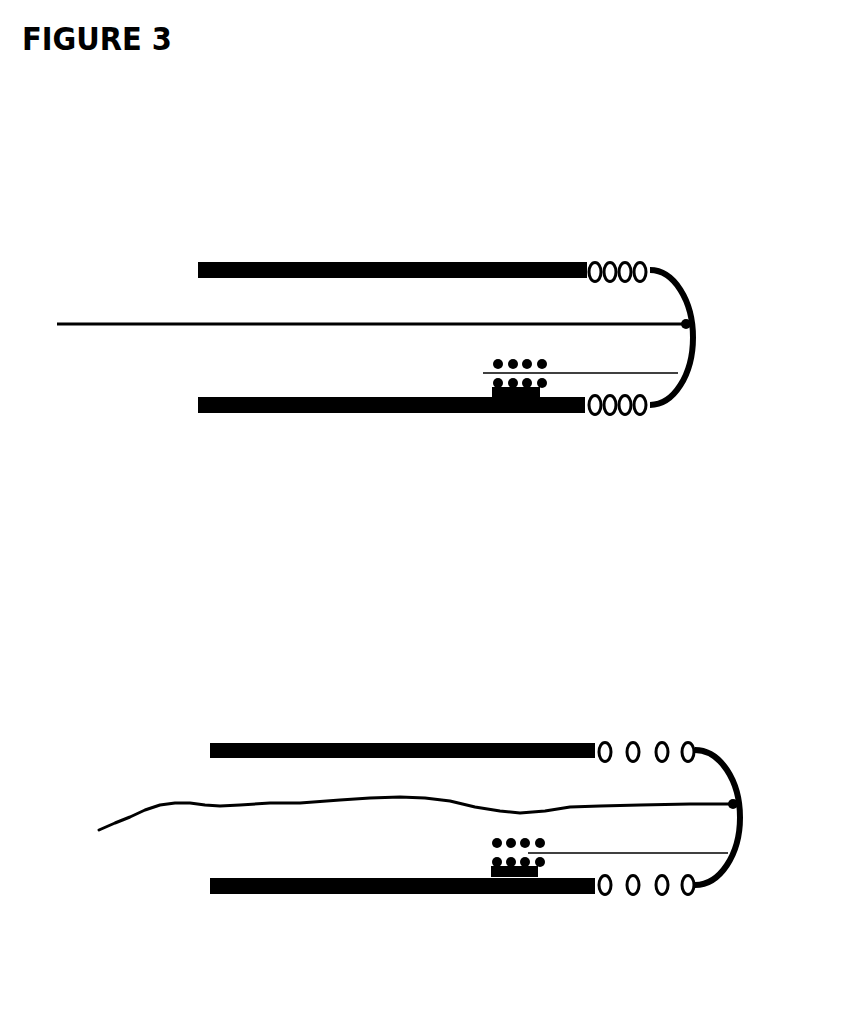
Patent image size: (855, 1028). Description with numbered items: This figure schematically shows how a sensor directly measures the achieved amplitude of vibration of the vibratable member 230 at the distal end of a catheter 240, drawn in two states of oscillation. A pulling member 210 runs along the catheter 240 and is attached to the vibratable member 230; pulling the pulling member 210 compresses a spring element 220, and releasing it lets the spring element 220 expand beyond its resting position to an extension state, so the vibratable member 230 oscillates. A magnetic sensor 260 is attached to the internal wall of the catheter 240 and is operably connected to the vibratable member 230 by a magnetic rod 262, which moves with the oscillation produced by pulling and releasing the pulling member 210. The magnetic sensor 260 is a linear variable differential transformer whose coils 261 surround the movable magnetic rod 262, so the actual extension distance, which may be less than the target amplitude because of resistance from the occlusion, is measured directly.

The pulling member 210 is at (305, 322).
The spring element 220 is at (610, 260).
The vibratable member 230 is at (679, 284).
The catheter 240 is at (398, 266).
The magnetic sensor 260 is at (492, 394).
The coils 261 is at (544, 388).
The magnetic rod 262 is at (655, 375).